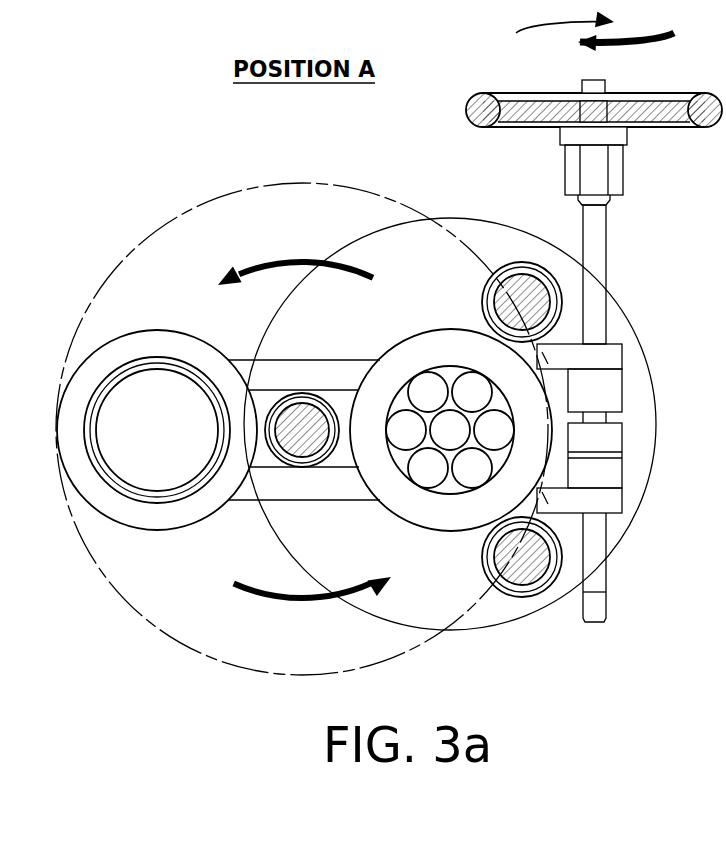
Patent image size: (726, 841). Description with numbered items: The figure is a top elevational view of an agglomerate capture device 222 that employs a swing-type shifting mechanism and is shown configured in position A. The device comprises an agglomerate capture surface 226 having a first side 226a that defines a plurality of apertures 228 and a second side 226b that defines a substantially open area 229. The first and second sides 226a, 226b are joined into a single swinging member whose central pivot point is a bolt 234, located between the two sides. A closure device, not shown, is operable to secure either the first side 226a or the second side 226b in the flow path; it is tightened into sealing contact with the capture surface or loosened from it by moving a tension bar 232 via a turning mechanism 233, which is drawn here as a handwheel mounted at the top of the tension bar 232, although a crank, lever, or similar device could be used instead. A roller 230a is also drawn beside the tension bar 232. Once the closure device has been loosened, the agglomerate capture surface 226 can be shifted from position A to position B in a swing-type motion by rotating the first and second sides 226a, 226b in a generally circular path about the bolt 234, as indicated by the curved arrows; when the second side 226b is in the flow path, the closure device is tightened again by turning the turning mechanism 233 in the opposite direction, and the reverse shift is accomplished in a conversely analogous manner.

The agglomerate capture device 222 is at (173, 159).
The agglomerate capture surface 226 is at (249, 516).
The first side 226a is at (450, 533).
The second side 226b is at (158, 328).
The apertures 228 is at (470, 387).
The substantially open area 229 is at (167, 388).
The roller 230a is at (500, 612).
The tension bar 232 is at (598, 250).
The turning mechanism 233 is at (660, 132).
The bolt 234 is at (305, 418).